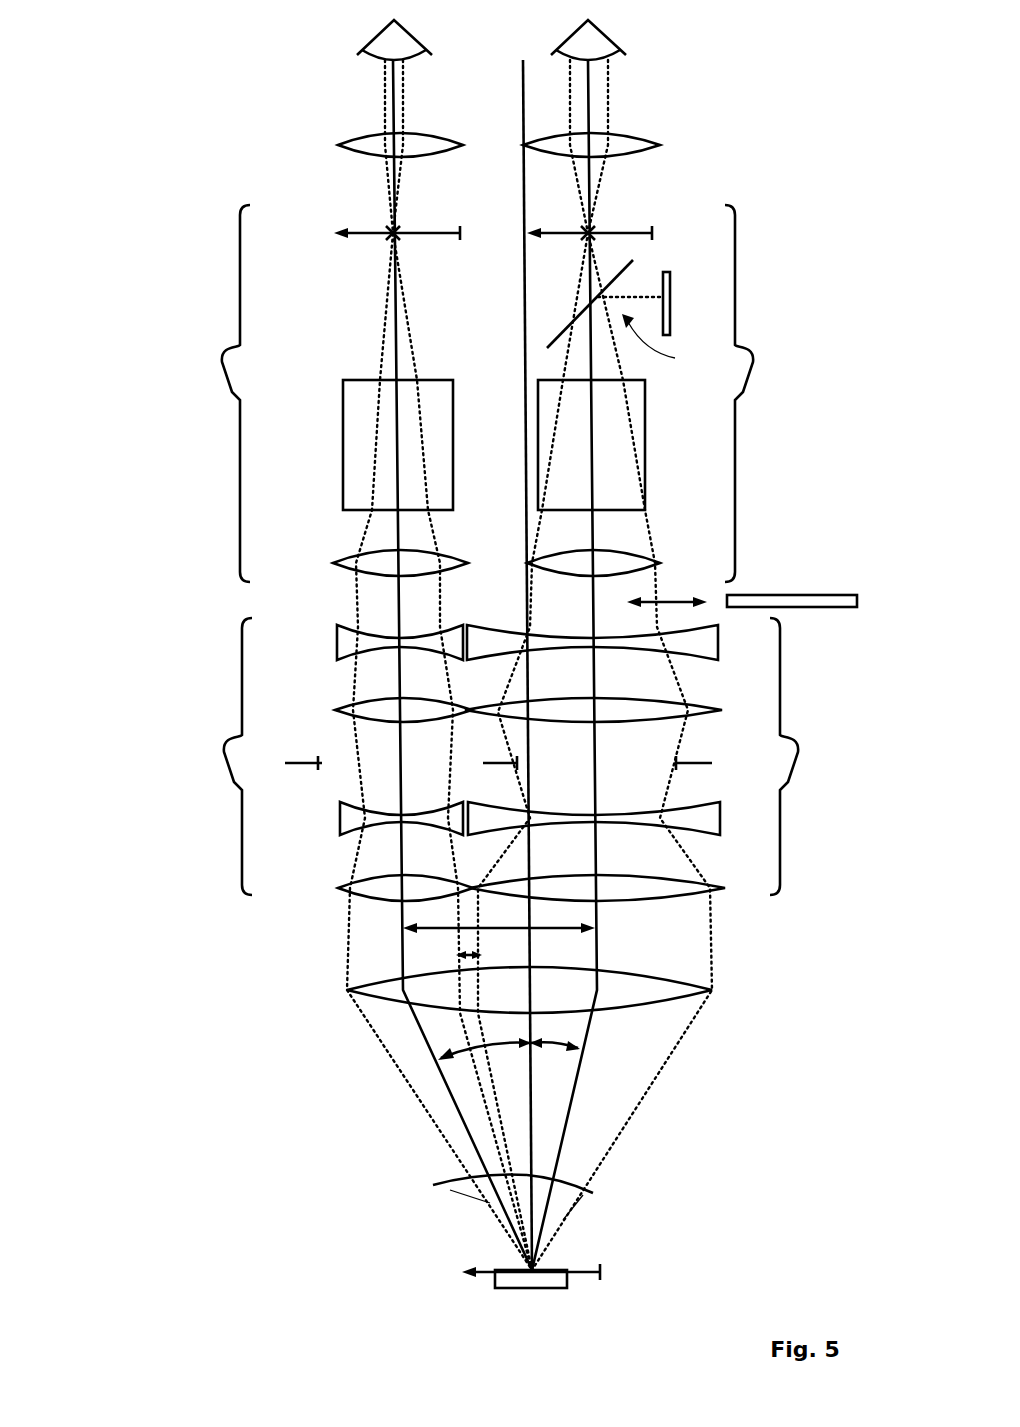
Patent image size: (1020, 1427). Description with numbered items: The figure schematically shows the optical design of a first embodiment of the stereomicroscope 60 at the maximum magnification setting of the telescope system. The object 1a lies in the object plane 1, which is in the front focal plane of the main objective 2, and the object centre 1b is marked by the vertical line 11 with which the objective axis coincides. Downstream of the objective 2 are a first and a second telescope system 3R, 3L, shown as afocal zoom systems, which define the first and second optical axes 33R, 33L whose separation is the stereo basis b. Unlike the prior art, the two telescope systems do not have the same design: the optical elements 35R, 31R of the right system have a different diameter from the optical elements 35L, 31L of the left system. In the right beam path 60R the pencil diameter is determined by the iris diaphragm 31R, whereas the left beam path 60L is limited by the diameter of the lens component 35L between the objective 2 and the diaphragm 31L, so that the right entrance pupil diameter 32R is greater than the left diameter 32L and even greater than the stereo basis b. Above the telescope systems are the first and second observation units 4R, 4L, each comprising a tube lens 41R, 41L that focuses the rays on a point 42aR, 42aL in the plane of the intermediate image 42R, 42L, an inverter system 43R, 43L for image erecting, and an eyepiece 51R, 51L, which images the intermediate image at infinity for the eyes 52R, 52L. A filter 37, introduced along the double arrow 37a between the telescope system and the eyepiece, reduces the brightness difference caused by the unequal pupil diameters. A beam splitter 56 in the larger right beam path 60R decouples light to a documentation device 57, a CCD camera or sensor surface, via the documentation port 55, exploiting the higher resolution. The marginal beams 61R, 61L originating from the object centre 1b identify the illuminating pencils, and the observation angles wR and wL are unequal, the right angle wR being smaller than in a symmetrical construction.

The object plane 1 is at (497, 1275).
The object 1a is at (495, 1287).
The object centre 1b is at (548, 1270).
The main objective 2 is at (344, 996).
The second telescope system 3L is at (223, 756).
The first telescope system 3R is at (803, 756).
The second observation unit 4L is at (220, 393).
The first observation unit 4R is at (756, 393).
The vertical line 11 is at (522, 74).
The left iris diaphragm 31L is at (308, 772).
The right iris diaphragm 31R is at (698, 765).
The left entrance pupil diameter 32L is at (336, 955).
The right entrance pupil diameter 32R is at (722, 955).
The second optical axis 33L is at (353, 700).
The first optical axis 33R is at (598, 690).
The left lens component 35L is at (338, 656).
The right lens component 35R is at (709, 647).
The filter 37 is at (742, 561).
The double arrow 37a is at (696, 596).
The left tube lens 41L is at (350, 556).
The right tube lens 41R is at (642, 556).
The left intermediate image 42L is at (363, 250).
The right intermediate image 42R is at (625, 218).
The left focus point 42aL is at (392, 240).
The right focus point 42aR is at (592, 230).
The left inverter system 43L is at (347, 400).
The right inverter system 43R is at (642, 400).
The left eyepiece 51L is at (340, 144).
The right eyepiece 51R is at (648, 144).
The left eye 52L is at (372, 46).
The right eye 52R is at (612, 46).
The documentation port 55 is at (662, 344).
The beam splitter 56 is at (560, 336).
The documentation device 57 is at (672, 282).
The stereomicroscope 60 is at (206, 592).
The left beam path 60L is at (442, 1118).
The right beam path 60R is at (612, 1118).
The left marginal beam 61L is at (434, 1185).
The right marginal beam 61R is at (593, 1193).
The stereo basis b is at (518, 926).
The left observation angle wL is at (441, 1060).
The right observation angle wR is at (578, 1048).